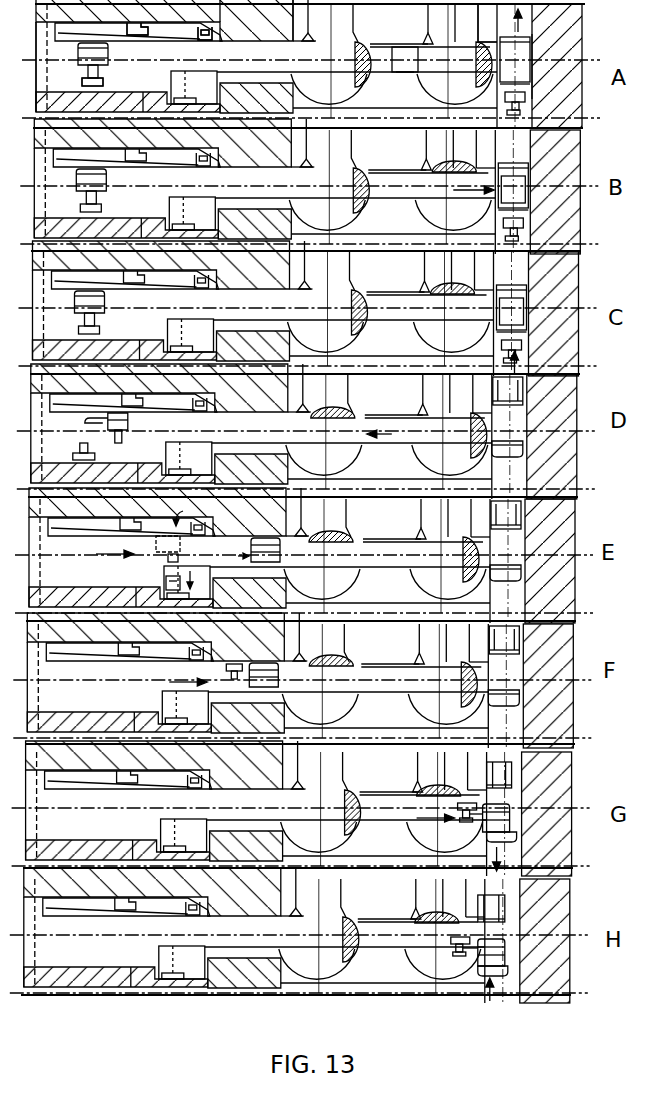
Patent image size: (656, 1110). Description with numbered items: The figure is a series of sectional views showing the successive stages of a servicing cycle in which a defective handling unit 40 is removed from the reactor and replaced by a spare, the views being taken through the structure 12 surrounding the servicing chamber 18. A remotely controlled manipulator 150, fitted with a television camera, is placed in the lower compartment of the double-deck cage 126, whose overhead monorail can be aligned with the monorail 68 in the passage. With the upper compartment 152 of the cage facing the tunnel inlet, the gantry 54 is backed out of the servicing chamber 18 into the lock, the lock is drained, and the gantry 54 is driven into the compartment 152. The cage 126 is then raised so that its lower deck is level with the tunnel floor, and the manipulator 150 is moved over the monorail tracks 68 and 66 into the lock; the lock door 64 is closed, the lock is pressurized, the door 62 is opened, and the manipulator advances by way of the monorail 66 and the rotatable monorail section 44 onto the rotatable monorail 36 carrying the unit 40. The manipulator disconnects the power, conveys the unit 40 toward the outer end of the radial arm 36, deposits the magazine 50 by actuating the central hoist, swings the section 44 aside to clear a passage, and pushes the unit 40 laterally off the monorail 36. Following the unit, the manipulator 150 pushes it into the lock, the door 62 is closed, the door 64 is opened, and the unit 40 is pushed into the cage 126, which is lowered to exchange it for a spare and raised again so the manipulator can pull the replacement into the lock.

The housing 12 is at (263, 22).
The servicing chamber 18 is at (66, 81).
The rotatable monorail 36 is at (146, 32).
The handling unit 40 is at (105, 60).
The rotatable monorail section 44 is at (206, 37).
The magazine 50 is at (104, 78).
The gantry 54 is at (405, 48).
The door 62 is at (366, 40).
The lock door 64 is at (478, 46).
The monorail 66 is at (454, 157).
The monorail 68 is at (488, 40).
The double-deck cage 126 is at (531, 79).
The manipulator 150 is at (526, 94).
The upper compartment 152 is at (530, 55).